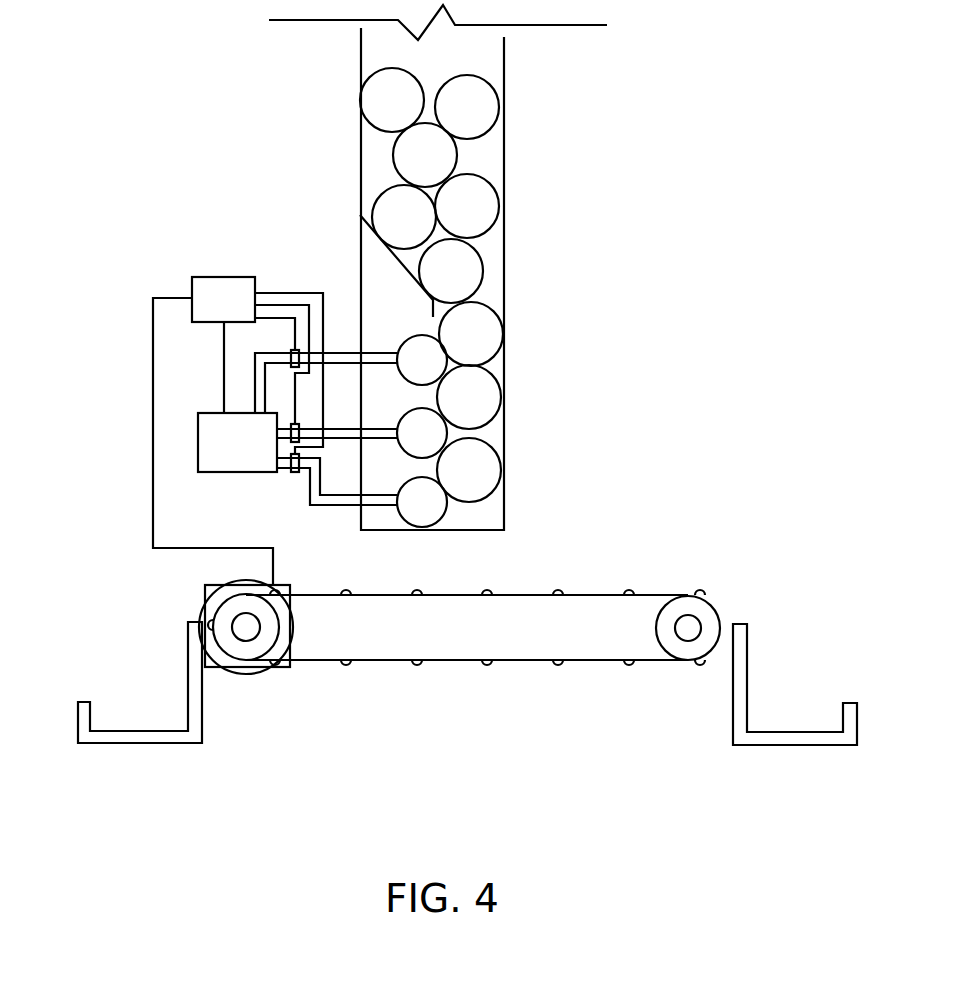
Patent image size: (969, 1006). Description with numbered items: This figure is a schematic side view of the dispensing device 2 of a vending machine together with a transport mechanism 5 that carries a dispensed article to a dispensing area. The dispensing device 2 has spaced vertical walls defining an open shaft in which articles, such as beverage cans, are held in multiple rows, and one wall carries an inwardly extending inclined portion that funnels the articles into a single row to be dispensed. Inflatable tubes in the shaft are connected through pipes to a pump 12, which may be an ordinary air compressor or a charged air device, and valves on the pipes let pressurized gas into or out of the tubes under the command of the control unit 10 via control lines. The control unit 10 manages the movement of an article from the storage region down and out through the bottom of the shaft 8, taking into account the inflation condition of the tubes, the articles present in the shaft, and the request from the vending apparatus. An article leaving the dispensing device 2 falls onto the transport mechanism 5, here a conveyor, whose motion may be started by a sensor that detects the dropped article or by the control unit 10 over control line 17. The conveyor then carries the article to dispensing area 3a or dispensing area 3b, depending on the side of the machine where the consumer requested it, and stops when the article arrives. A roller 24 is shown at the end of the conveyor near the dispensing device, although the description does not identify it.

The dispensing device 2 is at (242, 154).
The bottom of the shaft 8 is at (458, 532).
The control unit 10 is at (220, 288).
The pump 12 is at (218, 442).
The control line 17 is at (152, 344).
The drive roller 24 is at (290, 667).
The transport mechanism 5 is at (520, 593).
The dispensing area 3a is at (140, 675).
The dispensing area 3b is at (783, 672).